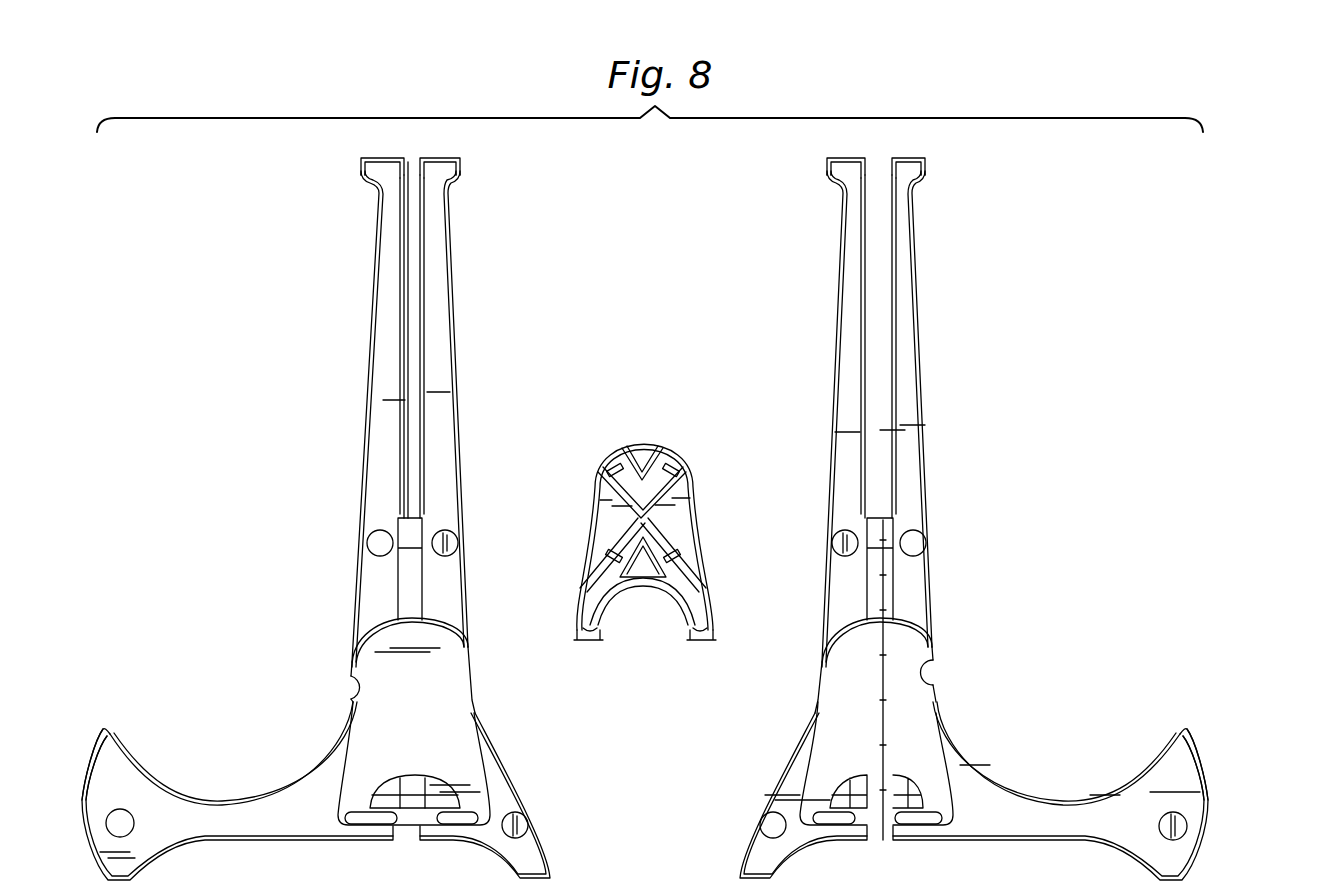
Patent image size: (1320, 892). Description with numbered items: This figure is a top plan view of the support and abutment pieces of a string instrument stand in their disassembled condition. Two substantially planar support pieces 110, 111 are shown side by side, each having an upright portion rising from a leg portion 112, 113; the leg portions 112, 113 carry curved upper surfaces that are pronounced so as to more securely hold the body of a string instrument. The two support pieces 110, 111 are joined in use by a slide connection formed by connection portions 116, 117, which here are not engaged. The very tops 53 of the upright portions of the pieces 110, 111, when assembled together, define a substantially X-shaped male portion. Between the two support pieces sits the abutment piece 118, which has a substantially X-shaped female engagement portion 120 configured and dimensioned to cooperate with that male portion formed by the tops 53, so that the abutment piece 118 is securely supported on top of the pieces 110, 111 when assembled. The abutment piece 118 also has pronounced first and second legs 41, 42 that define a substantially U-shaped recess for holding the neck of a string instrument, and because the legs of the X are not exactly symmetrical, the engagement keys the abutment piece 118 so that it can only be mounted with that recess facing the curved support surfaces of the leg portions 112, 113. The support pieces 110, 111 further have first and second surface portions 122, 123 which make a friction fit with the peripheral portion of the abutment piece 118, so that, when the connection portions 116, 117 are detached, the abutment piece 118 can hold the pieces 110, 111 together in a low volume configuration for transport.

The support piece 110 is at (252, 527).
The support piece 111 is at (1072, 472).
The tops of the pieces 53 is at (392, 158).
The slide connection portion 116 is at (400, 284).
The slide connection portion 117 is at (880, 657).
The abutment piece 118 is at (700, 452).
The X-shaped female engagement portion 120 is at (652, 498).
The first leg 41 is at (703, 643).
The second leg 42 is at (583, 643).
The leg portion 112 is at (98, 798).
The leg portion 113 is at (1198, 808).
The first surface portion 122 is at (362, 693).
The second surface portion 123 is at (920, 675).